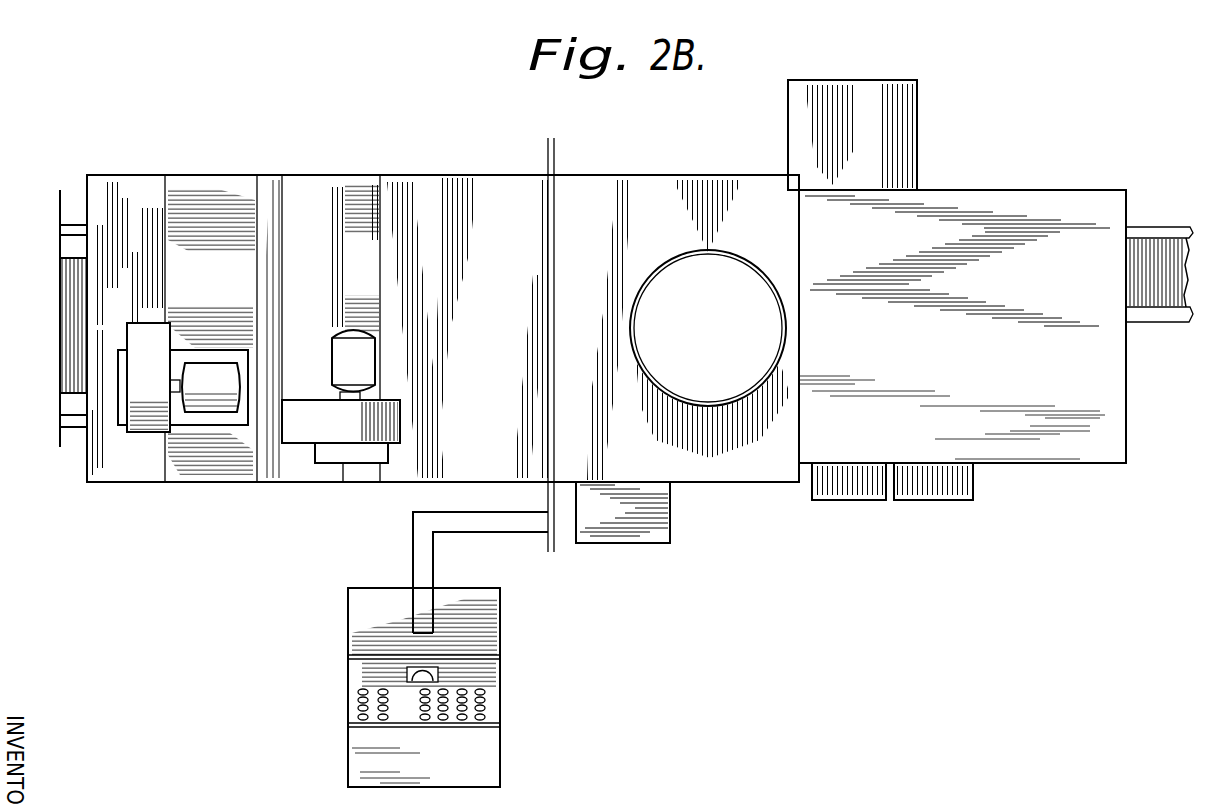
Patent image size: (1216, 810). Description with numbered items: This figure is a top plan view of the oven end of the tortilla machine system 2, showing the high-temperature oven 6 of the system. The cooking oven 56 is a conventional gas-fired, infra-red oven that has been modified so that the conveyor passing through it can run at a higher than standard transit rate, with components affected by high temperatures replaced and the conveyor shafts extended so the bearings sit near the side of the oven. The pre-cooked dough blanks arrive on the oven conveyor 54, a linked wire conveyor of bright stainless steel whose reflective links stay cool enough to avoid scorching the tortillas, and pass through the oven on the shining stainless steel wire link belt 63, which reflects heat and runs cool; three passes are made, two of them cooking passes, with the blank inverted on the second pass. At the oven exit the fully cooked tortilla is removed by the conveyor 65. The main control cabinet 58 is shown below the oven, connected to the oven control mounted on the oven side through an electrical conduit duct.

The tortilla machine system 2 is at (181, 70).
The cooking oven 56 is at (226, 182).
The stainless steel wire link belt 63 is at (73, 287).
The oven conveyor 54 is at (73, 372).
The high-temperature oven 6 is at (516, 293).
The conveyor 65 is at (1162, 245).
The main control cabinet 58 is at (358, 737).